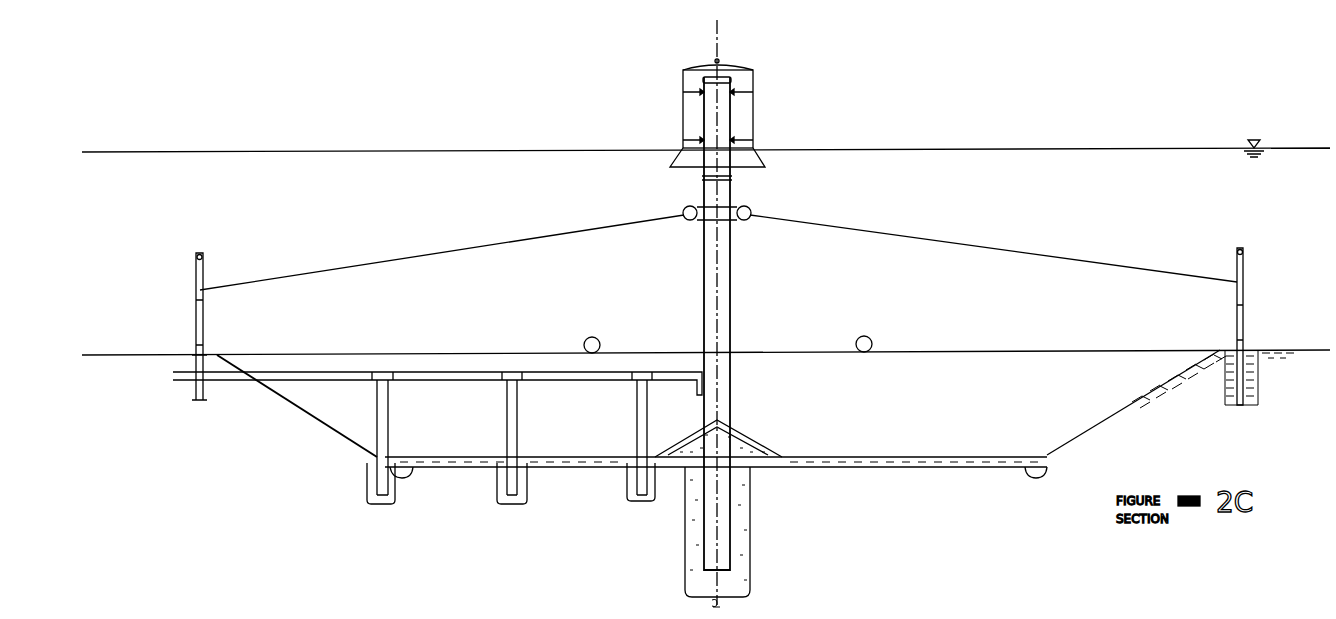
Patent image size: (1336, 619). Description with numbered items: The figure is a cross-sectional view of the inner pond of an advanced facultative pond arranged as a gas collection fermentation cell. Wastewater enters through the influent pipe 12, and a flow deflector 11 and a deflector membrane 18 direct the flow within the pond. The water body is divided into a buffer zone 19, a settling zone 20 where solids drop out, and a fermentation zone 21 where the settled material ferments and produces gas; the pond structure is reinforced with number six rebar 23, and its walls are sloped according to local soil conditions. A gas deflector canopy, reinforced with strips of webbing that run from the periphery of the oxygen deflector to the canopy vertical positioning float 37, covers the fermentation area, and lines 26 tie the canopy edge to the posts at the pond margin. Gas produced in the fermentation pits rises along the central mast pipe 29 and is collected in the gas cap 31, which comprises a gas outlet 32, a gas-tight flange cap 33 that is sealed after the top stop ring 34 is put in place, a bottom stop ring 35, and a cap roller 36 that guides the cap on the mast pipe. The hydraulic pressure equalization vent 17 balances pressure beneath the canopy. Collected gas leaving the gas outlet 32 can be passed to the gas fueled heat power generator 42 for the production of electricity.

The flow deflector 11 is at (713, 440).
The influent pipe 12 is at (347, 410).
The hydraulic pressure equalization vent 17 is at (588, 337).
The deflector membrane 18 is at (1243, 300).
The buffer zone 19 is at (927, 290).
The settling zone 20 is at (928, 358).
The fermentation zone 21 is at (927, 425).
The No. 6 Rebar 23 is at (1205, 352).
The cable 26 is at (508, 243).
The central mast pipe 29 is at (733, 292).
The gas cap 31 is at (682, 102).
The gas outlet 32 is at (719, 60).
The flange cap 33 is at (745, 70).
The top stop ring 34 is at (734, 92).
The bottom stop ring 35 is at (753, 140).
The cap roller 36 is at (735, 179).
The canopy vertical positioning float 37 is at (752, 212).
The gas fueled heat power generator 42 is at (628, 472).